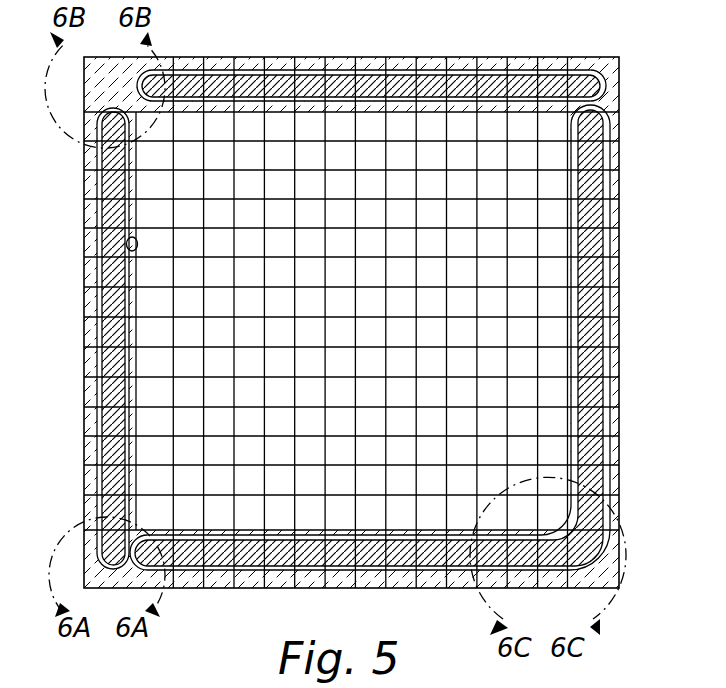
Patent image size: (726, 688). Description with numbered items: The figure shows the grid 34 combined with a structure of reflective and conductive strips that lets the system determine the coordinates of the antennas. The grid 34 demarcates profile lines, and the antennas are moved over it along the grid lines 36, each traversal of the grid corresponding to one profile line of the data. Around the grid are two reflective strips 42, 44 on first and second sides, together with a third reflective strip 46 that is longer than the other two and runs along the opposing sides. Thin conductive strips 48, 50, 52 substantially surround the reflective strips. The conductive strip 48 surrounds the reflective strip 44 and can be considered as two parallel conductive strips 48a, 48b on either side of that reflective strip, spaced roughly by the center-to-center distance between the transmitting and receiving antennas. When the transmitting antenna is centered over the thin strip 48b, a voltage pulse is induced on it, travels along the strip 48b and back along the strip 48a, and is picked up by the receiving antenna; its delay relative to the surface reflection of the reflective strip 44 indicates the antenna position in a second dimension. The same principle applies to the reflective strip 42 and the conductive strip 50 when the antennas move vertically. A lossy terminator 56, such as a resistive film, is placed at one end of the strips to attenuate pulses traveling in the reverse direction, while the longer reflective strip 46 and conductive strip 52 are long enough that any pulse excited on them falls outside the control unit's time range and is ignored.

The grid 34 is at (545, 594).
The grid lines 36 is at (172, 152).
The reflective strip 42 is at (585, 72).
The reflective strip 44 is at (110, 337).
The third reflective strip 46 is at (597, 310).
The conductive strip 48 is at (98, 425).
The parallel conductive strip 48a is at (98, 215).
The parallel conductive strip 48b is at (126, 246).
The conductive strip 50 is at (464, 72).
The conductive strip 52 is at (368, 570).
The lossy terminator 56 is at (108, 572).